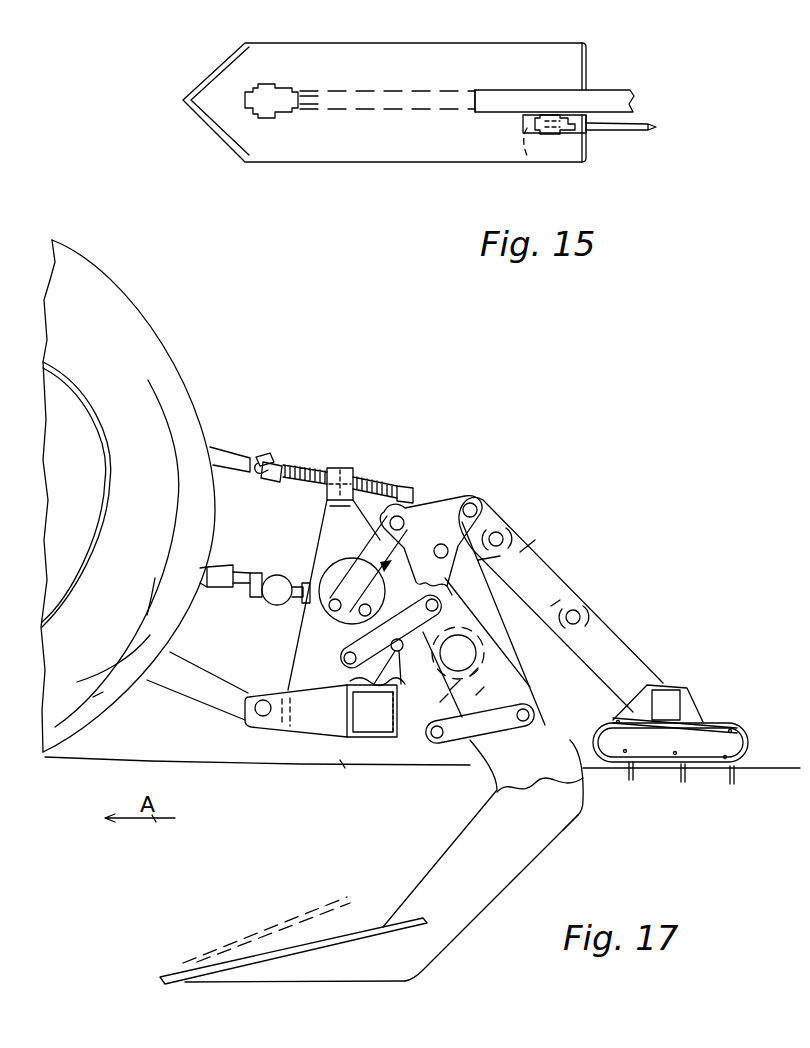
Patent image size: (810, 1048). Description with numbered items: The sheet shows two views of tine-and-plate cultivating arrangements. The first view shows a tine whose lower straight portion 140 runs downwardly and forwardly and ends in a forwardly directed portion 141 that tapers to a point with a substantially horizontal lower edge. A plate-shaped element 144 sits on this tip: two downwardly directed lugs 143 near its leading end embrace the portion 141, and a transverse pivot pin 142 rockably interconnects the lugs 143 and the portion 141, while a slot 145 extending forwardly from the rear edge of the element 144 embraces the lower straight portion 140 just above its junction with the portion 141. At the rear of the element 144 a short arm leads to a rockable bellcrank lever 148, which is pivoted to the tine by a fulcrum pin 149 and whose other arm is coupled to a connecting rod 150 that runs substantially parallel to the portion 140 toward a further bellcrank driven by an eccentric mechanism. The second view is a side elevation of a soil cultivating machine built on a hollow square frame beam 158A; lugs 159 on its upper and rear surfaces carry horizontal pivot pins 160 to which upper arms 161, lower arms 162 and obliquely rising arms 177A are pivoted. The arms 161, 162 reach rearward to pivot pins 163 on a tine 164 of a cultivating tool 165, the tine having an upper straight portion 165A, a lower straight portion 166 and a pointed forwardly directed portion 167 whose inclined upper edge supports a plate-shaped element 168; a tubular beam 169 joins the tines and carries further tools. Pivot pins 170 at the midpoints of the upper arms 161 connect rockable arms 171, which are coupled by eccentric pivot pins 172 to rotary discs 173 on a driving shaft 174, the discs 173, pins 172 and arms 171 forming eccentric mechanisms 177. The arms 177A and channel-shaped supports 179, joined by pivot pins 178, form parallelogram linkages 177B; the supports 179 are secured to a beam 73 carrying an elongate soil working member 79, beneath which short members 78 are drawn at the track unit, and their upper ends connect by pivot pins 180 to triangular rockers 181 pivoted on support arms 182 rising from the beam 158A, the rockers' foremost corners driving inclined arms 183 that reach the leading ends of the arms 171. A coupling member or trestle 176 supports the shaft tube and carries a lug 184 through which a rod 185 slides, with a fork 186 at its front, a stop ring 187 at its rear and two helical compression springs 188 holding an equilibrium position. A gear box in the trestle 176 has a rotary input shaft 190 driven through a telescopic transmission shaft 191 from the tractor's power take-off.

In FIG. 15, the lower straight portion 140 is at (632, 82).
In FIG. 15, the forwardly directed portion 141 is at (398, 92).
In FIG. 15, the transverse pivot pin 142 is at (290, 72).
In FIG. 15, the downwardly directed lugs 143 is at (304, 118).
In FIG. 15, the plate-shaped element 144 is at (352, 40).
In FIG. 15, the slot 145 is at (546, 80).
In FIG. 15, the bellcrank lever 148 is at (521, 127).
In FIG. 15, the fulcrum pin 149 is at (528, 160).
In FIG. 15, the connecting rod 150 is at (646, 136).
In FIG. 17, the beam 73 is at (680, 687).
In FIG. 17, the track legs 78 is at (730, 780).
In FIG. 17, the elongate soil working member 79 is at (755, 705).
In FIG. 17, the frame beam 158A is at (351, 777).
In FIG. 17, the lugs 159 is at (374, 730).
In FIG. 17, the pivot pins 160 is at (342, 660).
In FIG. 17, the upper arms 161 is at (292, 680).
In FIG. 17, the lower arms 162 is at (510, 728).
In FIG. 17, the pivot pins 163 is at (455, 595).
In FIG. 17, the tine 164 is at (585, 838).
In FIG. 17, the cultivating tool 165 is at (462, 814).
In FIG. 17, the upper straight portion 165A is at (551, 606).
In FIG. 17, the lower straight portion 166 is at (455, 857).
In FIG. 17, the forwardly directed portion 167 is at (311, 970).
In FIG. 17, the plate-shaped element 168 is at (265, 918).
In FIG. 17, the tubular beam 169 is at (540, 650).
In FIG. 17, the pivot pins 170 is at (378, 712).
In FIG. 17, the rockable arms 171 is at (345, 650).
In FIG. 17, the eccentric pivot pins 172 is at (330, 618).
In FIG. 17, the rotary discs 173 is at (328, 560).
In FIG. 17, the driving shaft 174 is at (322, 574).
In FIG. 17, the coupling member or trestle 176 is at (333, 511).
In FIG. 17, the eccentric mechanisms 177 is at (431, 541).
In FIG. 17, the arms 177A is at (478, 560).
In FIG. 17, the parallelogram linkages 177B is at (522, 623).
In FIG. 17, the pivot pins 178 is at (508, 532).
In FIG. 17, the channel-shaped supports 179 is at (520, 552).
In FIG. 17, the pivot pins 180 is at (478, 496).
In FIG. 17, the triangular rockers 181 is at (416, 497).
In FIG. 17, the support arms 182 is at (356, 708).
In FIG. 17, the arm 183 is at (334, 595).
In FIG. 17, the lug 184 is at (341, 467).
In FIG. 17, the rod 185 is at (422, 506).
In FIG. 17, the fork 186 is at (265, 442).
In FIG. 17, the stop ring 187 is at (410, 487).
In FIG. 17, the helical compression springs 188 is at (300, 464).
In FIG. 17, the rotary input shaft 190 is at (290, 607).
In FIG. 17, the telescopic transmission shaft 191 is at (225, 577).